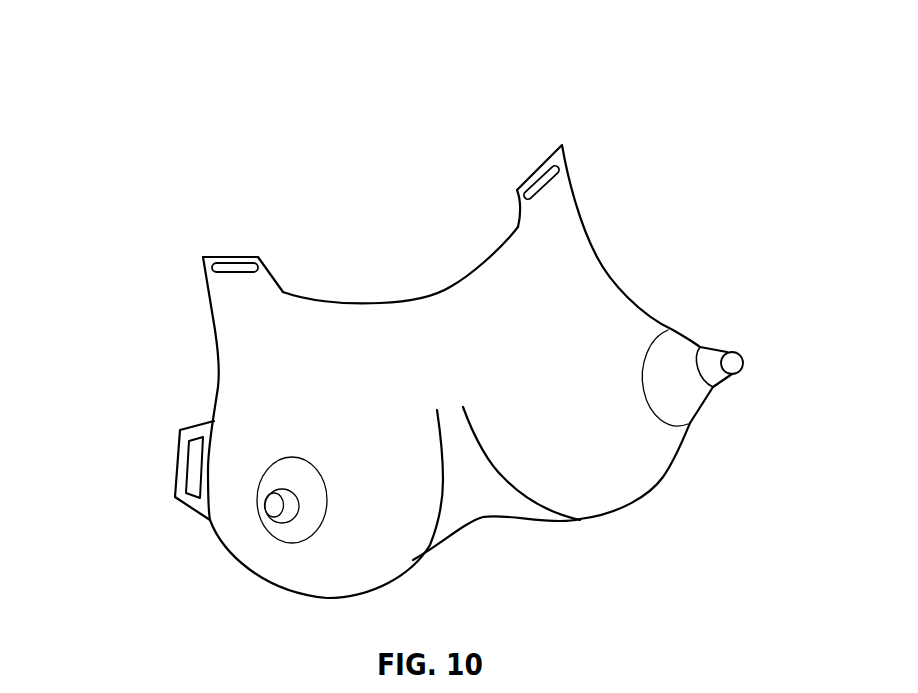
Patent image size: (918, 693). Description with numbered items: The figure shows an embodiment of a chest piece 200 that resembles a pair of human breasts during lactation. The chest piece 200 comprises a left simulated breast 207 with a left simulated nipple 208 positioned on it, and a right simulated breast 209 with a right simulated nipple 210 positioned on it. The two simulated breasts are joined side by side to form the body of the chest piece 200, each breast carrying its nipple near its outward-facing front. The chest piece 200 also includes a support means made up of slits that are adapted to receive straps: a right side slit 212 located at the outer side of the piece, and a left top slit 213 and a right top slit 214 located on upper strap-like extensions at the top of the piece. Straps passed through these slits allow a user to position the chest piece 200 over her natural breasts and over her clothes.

The chest piece 200 is at (178, 92).
The left simulated breast 207 is at (607, 333).
The left simulated nipple 208 is at (692, 397).
The right simulated breast 209 is at (327, 420).
The right simulated nipple 210 is at (293, 528).
The right side slit 212 is at (173, 465).
The left top slit 213 is at (545, 158).
The right top slit 214 is at (230, 257).